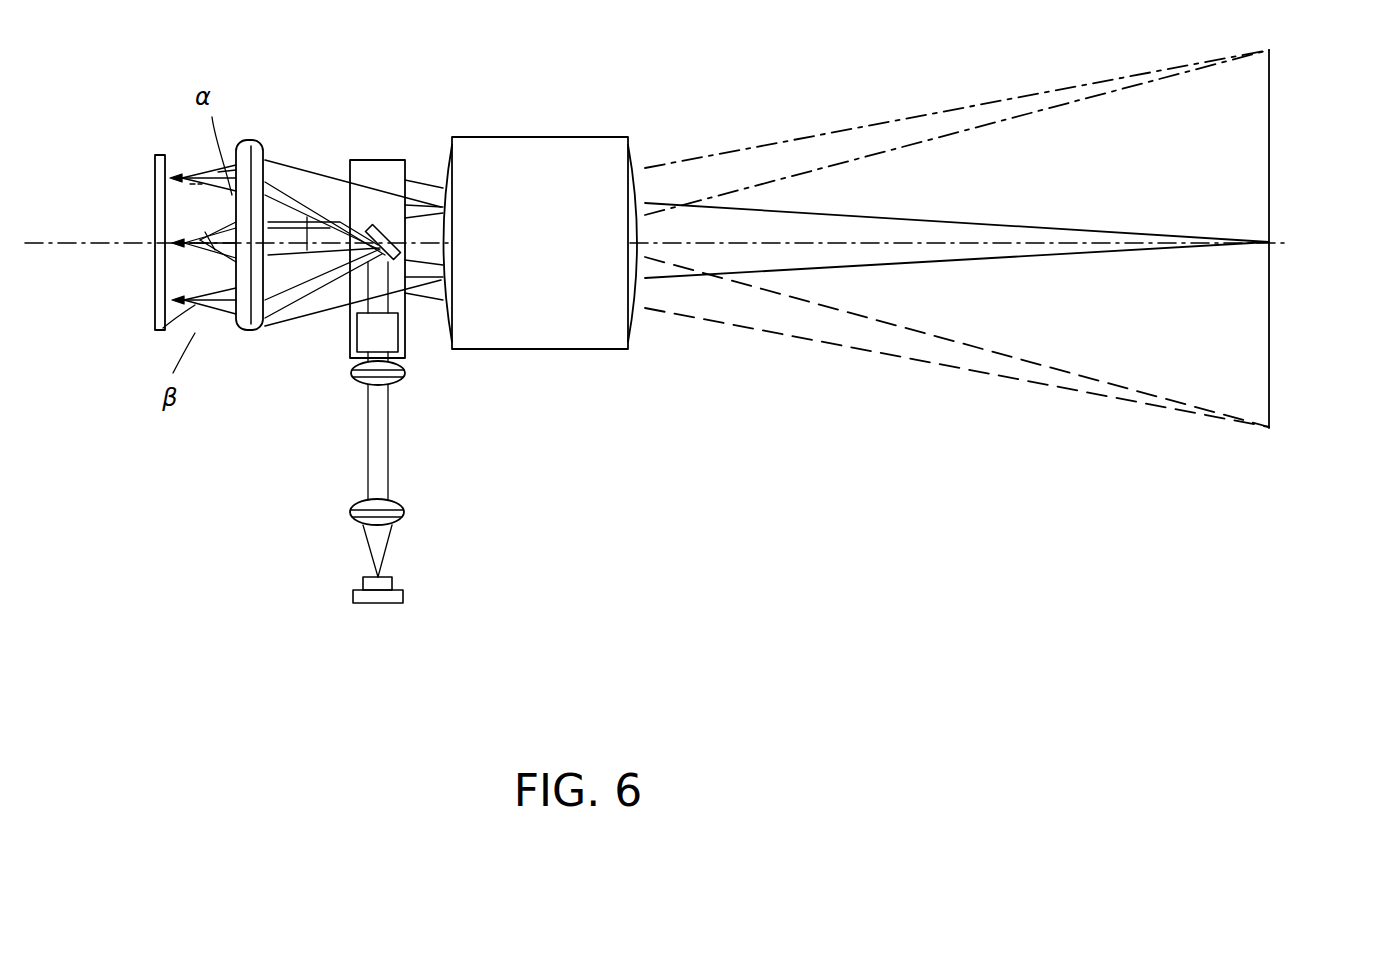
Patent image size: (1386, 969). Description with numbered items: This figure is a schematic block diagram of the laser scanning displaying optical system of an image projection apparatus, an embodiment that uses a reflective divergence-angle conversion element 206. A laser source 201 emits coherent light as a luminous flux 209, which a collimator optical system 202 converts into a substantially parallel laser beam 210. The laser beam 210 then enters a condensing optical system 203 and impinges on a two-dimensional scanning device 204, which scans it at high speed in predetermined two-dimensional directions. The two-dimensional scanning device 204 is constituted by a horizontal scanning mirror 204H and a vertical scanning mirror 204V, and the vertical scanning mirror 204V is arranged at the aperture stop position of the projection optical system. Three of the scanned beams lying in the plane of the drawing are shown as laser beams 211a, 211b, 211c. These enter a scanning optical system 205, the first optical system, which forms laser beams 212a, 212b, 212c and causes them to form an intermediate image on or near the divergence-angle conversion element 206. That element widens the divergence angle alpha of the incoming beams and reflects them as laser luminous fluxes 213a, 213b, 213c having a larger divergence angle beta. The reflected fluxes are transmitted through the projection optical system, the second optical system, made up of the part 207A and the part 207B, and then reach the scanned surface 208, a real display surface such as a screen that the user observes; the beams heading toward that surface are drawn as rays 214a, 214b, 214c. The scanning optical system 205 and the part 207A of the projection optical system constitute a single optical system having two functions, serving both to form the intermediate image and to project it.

The laser source 201 is at (402, 595).
The collimator optical system 202 is at (403, 510).
The condensing optical system 203 is at (378, 388).
The two-dimensional scanning device 204 is at (357, 137).
The horizontal scanning mirror 204H is at (395, 262).
The vertical scanning mirror 204V is at (378, 330).
The scanning optical system 205 is at (220, 182).
The part of projection optical system 207A is at (252, 147).
The divergence-angle conversion element 206 is at (157, 335).
The part of projection optical system 207B is at (580, 177).
The scanned surface 208 is at (1270, 198).
The luminous flux 209 is at (380, 537).
The laser beam 210 is at (378, 418).
The laser beam 211a is at (318, 330).
The laser beam 211b is at (340, 340).
The laser beam 211c is at (300, 320).
The laser beam 212a is at (207, 232).
The laser beam 212b is at (200, 297).
The laser beam 212c is at (207, 172).
The laser luminous flux 213a is at (218, 233).
The laser luminous flux 213b is at (160, 318).
The laser luminous flux 213c is at (223, 188).
The projected light beam 214a is at (1010, 237).
The projected light beam 214b is at (1023, 112).
The projected light beam 214c is at (1002, 360).